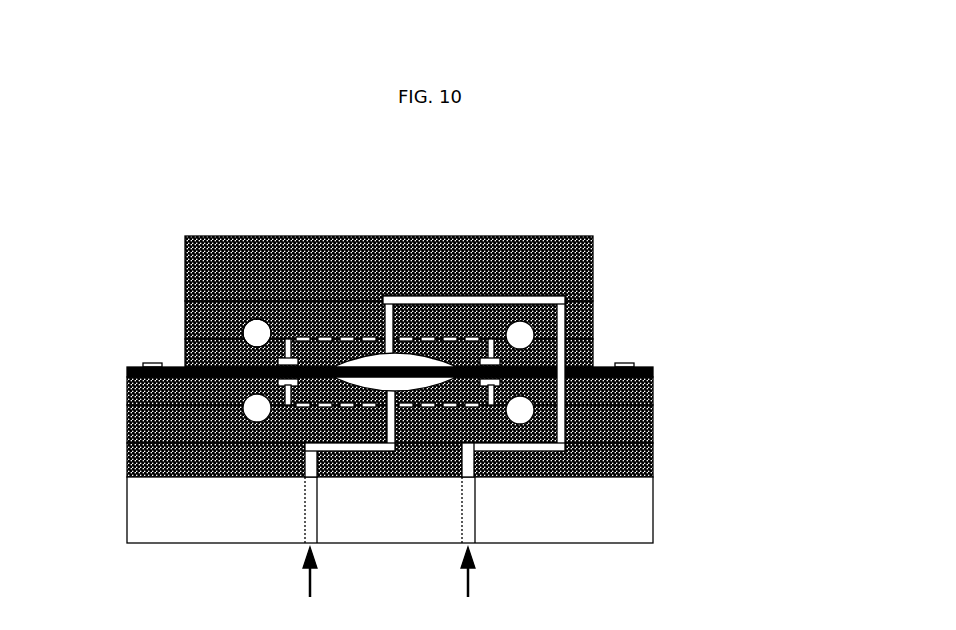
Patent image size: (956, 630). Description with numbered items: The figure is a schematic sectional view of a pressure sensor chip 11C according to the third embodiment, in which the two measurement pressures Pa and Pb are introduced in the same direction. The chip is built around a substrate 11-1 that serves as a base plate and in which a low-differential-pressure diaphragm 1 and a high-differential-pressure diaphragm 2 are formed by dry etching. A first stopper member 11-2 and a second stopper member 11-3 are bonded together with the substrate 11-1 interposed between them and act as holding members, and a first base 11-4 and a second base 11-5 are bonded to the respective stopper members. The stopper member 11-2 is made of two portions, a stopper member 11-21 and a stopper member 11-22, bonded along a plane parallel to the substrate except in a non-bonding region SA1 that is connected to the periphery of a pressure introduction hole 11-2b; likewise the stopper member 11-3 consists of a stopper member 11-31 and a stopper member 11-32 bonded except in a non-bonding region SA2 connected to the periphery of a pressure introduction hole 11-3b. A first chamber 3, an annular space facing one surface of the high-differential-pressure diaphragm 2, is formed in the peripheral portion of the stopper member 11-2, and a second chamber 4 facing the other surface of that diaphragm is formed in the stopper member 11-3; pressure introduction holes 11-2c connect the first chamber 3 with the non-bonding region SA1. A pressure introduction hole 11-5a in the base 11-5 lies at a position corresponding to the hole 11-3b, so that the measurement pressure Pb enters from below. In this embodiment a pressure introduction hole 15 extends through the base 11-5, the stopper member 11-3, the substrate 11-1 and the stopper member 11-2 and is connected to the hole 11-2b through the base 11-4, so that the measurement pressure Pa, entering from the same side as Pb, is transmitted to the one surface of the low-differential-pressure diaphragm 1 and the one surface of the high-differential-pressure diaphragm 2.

The pressure sensor chip 11C is at (486, 383).
The first base 11-4 is at (593, 248).
The first stopper member 11-2 is at (485, 330).
The stopper member 11-22 is at (593, 312).
The stopper member 11-21 is at (593, 346).
The pressure introduction hole 11-2b is at (408, 306).
The pressure introduction hole 11-2c is at (253, 321).
The substrate 11-1 is at (653, 373).
The second stopper member 11-3 is at (452, 414).
The stopper member 11-31 is at (652, 398).
The stopper member 11-32 is at (637, 430).
The pressure introduction hole 11-3b is at (392, 430).
The pressure introduction hole 15 is at (652, 472).
The second base 11-5 is at (452, 510).
The pressure introduction hole 11-5a is at (307, 508).
The low-differential-pressure diaphragm 1 is at (371, 383).
The high-differential-pressure diaphragm 2 is at (462, 312).
The first chamber 3 is at (247, 337).
The second chamber 4 is at (252, 410).
The non-bonding region SA1 is at (330, 362).
The non-bonding region SA2 is at (455, 392).
The measurement pressure Pa is at (479, 542).
The measurement pressure Pb is at (321, 576).